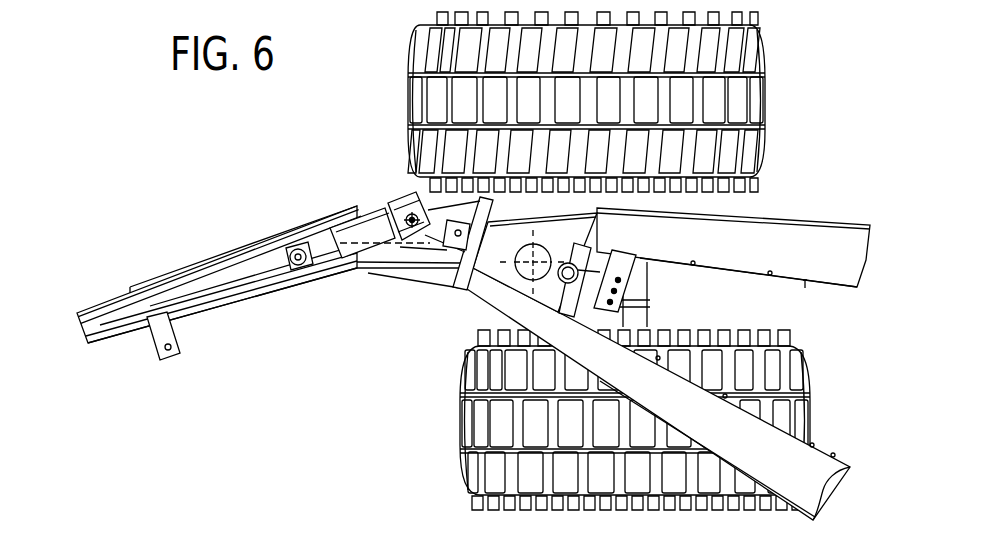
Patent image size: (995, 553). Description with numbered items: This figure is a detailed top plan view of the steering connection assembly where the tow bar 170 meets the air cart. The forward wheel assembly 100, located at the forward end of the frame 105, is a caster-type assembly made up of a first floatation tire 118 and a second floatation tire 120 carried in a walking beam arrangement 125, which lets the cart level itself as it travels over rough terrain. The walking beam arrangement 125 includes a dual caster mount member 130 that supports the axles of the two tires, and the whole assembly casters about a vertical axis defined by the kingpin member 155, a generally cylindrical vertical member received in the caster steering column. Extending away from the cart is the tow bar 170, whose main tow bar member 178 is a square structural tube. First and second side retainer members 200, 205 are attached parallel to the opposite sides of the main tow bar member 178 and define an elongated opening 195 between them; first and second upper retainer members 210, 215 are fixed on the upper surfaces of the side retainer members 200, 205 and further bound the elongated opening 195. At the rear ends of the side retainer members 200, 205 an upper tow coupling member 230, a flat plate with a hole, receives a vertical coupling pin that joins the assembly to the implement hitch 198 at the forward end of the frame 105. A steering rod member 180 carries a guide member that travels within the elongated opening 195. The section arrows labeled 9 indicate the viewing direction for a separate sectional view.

The section view indicator 9 is at (58, 318).
The vehicle frame assembly 100 is at (350, 405).
The frame rail 105 is at (825, 180).
The rear wheel 118 is at (455, 425).
The front wheel 120 is at (757, 50).
The axle bracket 125 is at (686, 308).
The cross member 130 is at (655, 283).
The mounting plate 155 is at (512, 281).
The arm assembly 170 is at (268, 271).
The bracket 178 is at (116, 330).
The end bracket 180 is at (324, 217).
The arm member 195 is at (248, 283).
The pivot pin 198 is at (379, 159).
The fastener 200 is at (133, 290).
The lower member 205 is at (212, 305).
The upper member 210 is at (266, 217).
The channel 215 is at (218, 300).
The pivot bracket 230 is at (375, 205).